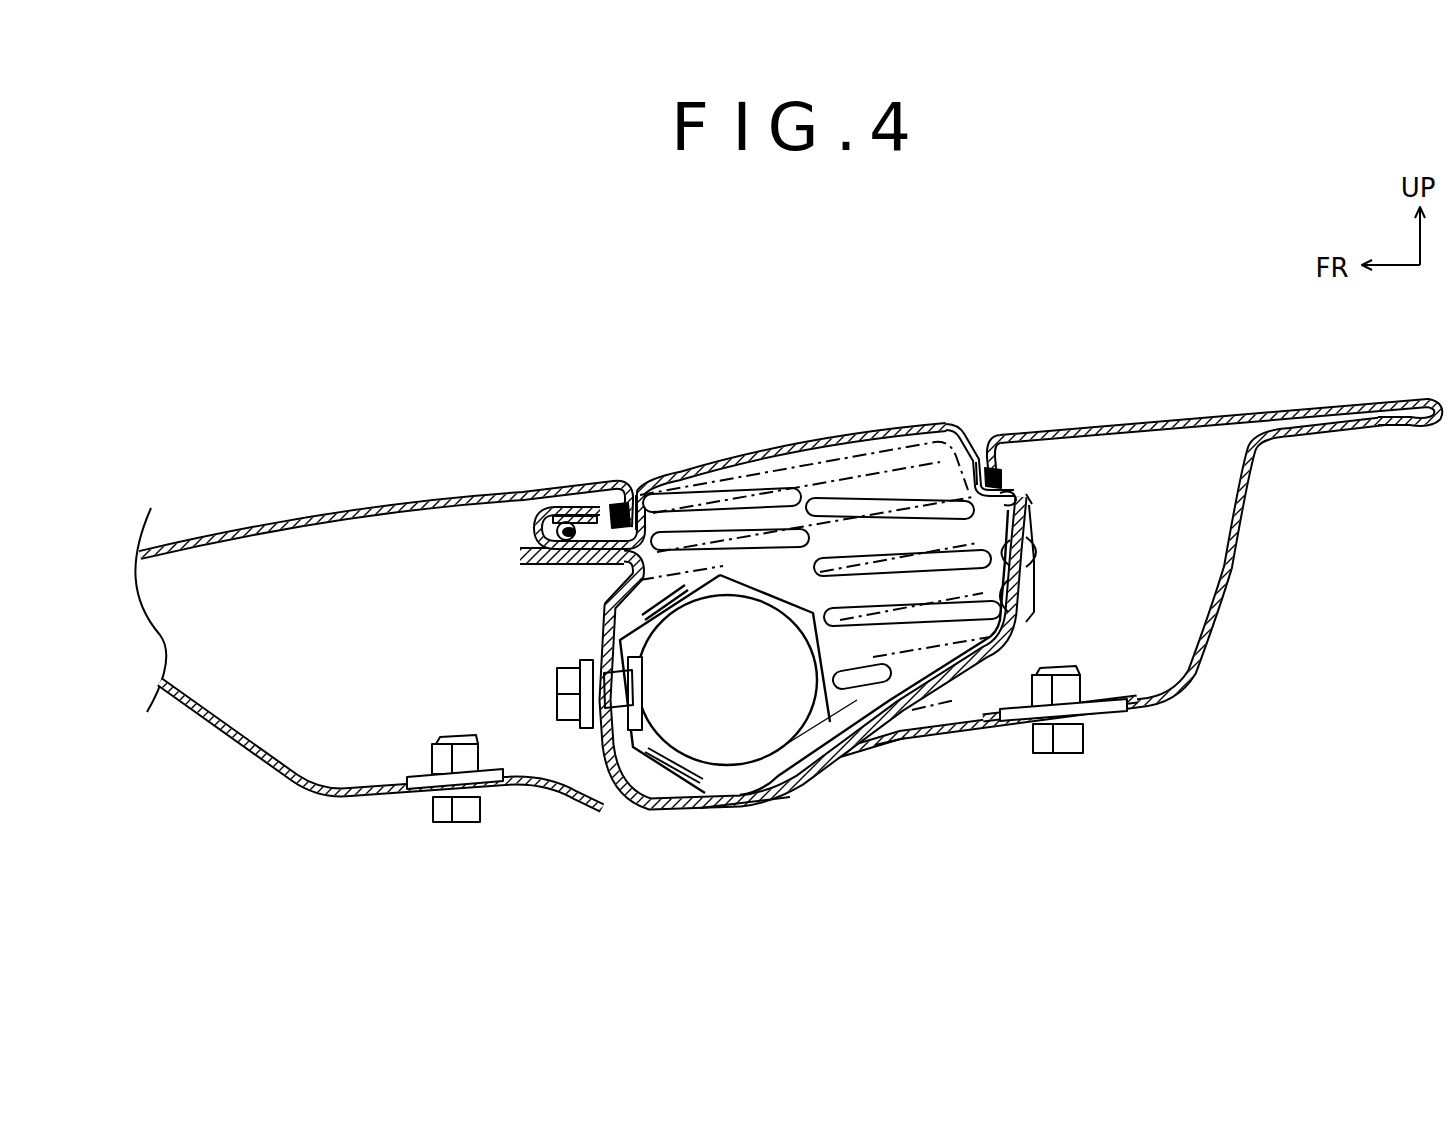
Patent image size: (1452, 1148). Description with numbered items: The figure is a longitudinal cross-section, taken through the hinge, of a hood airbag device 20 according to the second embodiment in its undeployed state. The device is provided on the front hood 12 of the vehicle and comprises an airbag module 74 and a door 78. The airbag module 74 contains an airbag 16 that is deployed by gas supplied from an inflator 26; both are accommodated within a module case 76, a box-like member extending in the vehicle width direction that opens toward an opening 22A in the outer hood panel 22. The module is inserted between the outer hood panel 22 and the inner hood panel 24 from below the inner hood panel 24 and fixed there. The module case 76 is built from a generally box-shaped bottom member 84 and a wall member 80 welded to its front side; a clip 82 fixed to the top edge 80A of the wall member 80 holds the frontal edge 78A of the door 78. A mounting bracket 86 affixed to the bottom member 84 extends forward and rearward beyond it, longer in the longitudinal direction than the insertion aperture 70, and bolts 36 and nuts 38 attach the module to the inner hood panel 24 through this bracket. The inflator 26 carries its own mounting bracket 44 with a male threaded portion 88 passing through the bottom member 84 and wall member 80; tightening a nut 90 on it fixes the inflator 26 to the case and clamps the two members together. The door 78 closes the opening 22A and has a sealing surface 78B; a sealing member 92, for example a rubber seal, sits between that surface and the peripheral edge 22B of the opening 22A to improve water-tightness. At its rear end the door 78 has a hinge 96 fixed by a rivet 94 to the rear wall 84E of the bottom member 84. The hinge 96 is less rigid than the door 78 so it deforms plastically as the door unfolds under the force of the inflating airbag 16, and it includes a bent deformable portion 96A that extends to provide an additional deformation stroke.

The hood 12 is at (390, 460).
The airbag 16 is at (848, 476).
The hood airbag device 20 is at (842, 590).
The outer hood panel 22 is at (1168, 412).
The opening 22A is at (952, 475).
The peripheral edge 22B is at (633, 488).
The inner hood panel 24 is at (313, 790).
The inflator 26 is at (728, 768).
The bolts 36 is at (458, 810).
The nuts 38 is at (445, 752).
The mounting bracket 44 is at (783, 600).
The insertion aperture 70 is at (1006, 734).
The airbag module 74 is at (806, 816).
The module case 76 is at (925, 710).
The door 78 is at (805, 428).
The frontal edge 78A is at (580, 525).
The sealing surface 78B is at (660, 490).
The wall member 80 is at (588, 632).
The top edge 80A is at (560, 566).
The clip 82 is at (560, 530).
The bottom member 84 is at (623, 786).
The rear wall 84E is at (1033, 612).
The mounting bracket 86 is at (897, 745).
The male threaded portion 88 is at (557, 700).
The nut 90 is at (604, 680).
The sealing member 92 is at (612, 506).
The rivet 94 is at (1042, 541).
The hinge 96 is at (1030, 505).
The deformable portion 96A is at (1042, 505).